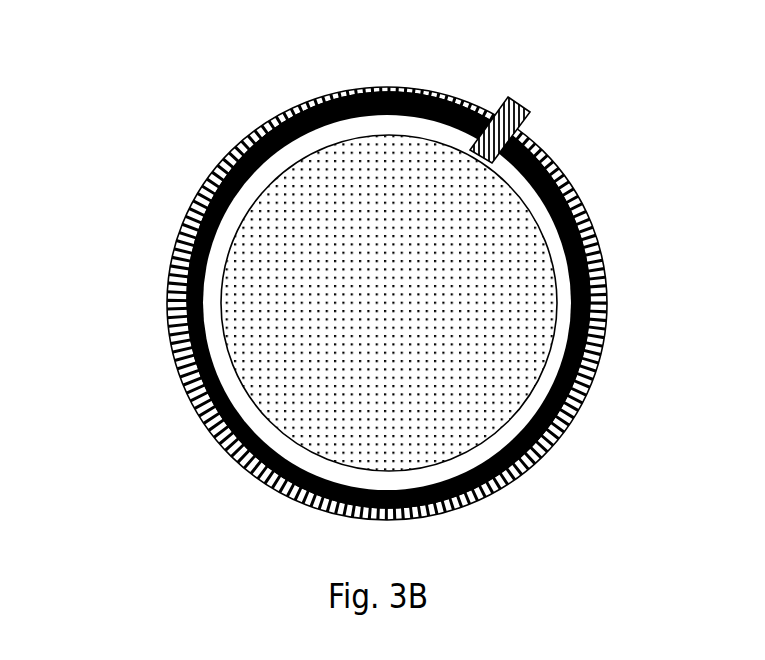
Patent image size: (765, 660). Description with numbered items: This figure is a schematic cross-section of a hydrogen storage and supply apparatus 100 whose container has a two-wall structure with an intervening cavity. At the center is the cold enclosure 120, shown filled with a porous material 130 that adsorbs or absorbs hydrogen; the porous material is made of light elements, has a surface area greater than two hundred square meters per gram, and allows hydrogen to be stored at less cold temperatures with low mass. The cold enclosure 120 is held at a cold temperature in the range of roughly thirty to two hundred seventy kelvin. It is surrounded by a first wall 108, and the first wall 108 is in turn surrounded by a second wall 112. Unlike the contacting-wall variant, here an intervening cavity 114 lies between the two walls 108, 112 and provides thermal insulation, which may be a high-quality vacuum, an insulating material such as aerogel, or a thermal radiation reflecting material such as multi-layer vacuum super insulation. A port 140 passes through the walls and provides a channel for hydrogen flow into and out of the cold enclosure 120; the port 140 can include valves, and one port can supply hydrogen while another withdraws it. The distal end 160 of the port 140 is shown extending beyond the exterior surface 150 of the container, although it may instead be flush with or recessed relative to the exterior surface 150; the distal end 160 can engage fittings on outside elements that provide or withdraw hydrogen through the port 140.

The hydrogen storage and supply apparatus 100 is at (375, 260).
The first wall 108 is at (228, 227).
The second wall 112 is at (177, 290).
The intervening cavity 114 is at (180, 373).
The cold enclosure 120 is at (495, 327).
The porous material 130 is at (389, 186).
The port 140 is at (488, 123).
The exterior surface 150 is at (223, 448).
The distal end 160 is at (518, 107).